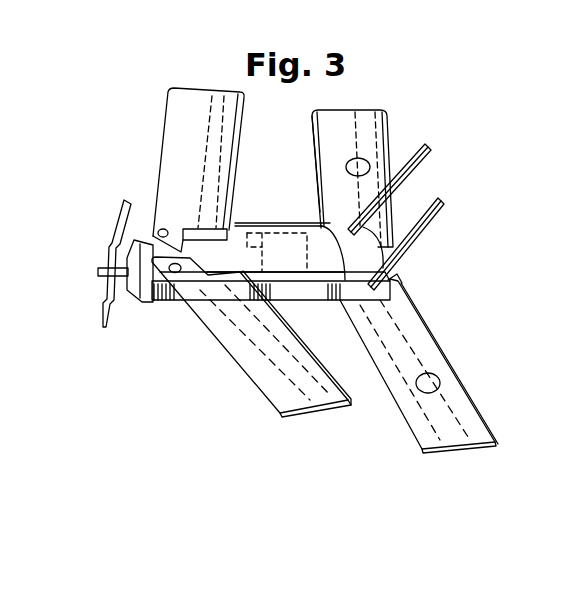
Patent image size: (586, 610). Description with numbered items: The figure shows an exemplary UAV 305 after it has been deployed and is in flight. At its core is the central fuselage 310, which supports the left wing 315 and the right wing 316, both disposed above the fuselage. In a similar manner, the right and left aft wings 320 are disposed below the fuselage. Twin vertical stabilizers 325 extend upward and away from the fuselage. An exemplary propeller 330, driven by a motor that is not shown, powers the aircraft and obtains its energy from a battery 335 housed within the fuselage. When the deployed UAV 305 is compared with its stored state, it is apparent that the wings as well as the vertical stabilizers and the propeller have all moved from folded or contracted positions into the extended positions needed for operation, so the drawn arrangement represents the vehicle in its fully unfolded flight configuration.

The UAV 305 is at (134, 113).
The central fuselage 310 is at (250, 223).
The left wing 315 is at (227, 340).
The right wing 316 is at (160, 155).
The aft wings 320 is at (425, 357).
The vertical stabilizers 325 is at (425, 142).
The propeller 330 is at (120, 214).
The battery 335 is at (305, 300).